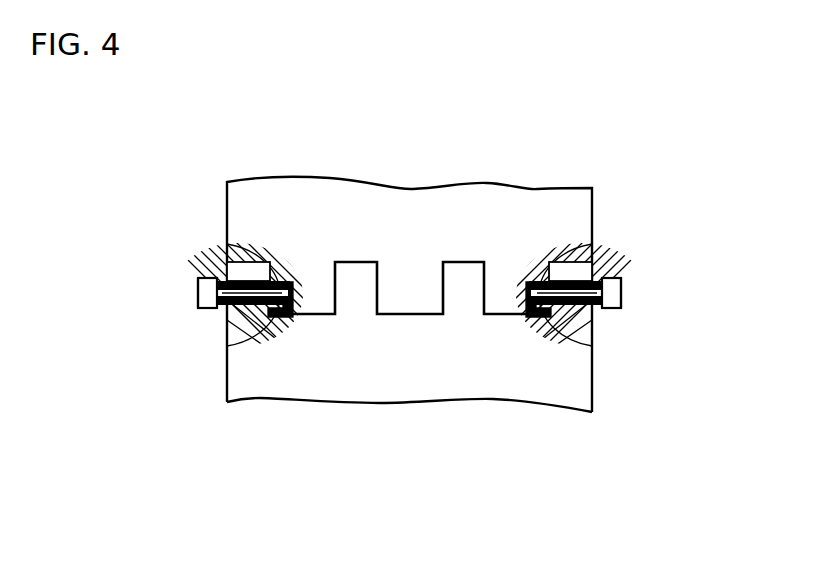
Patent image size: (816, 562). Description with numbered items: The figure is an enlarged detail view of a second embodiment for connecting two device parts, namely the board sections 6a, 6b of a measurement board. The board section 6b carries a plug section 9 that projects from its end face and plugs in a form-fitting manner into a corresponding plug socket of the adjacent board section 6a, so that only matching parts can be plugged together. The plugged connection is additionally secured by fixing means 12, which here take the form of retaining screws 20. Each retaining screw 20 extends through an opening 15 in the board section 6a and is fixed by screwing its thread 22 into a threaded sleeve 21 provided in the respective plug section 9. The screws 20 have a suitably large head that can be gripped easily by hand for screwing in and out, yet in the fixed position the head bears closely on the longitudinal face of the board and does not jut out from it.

The board section 6a is at (425, 387).
The board section 6b is at (582, 218).
The plug section 9 is at (303, 318).
The fixing means 12 is at (182, 272).
The opening 15 is at (253, 306).
The retaining screw 20 is at (240, 333).
The threaded sleeve 21 is at (287, 258).
The thread 22 is at (278, 322).